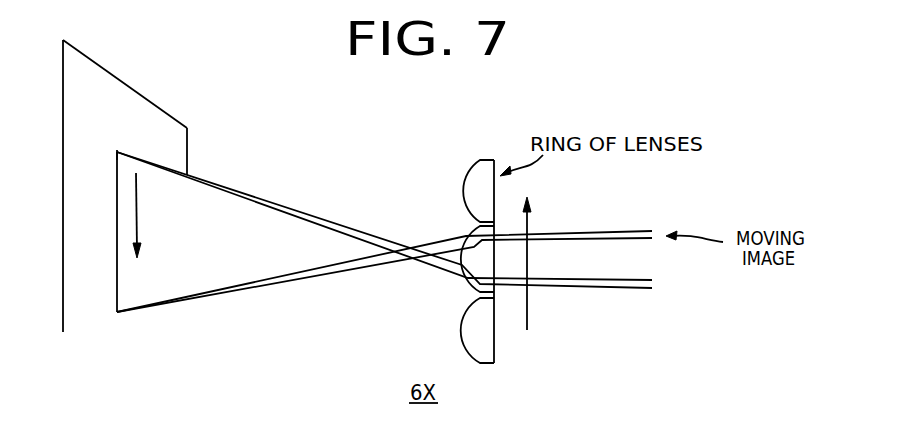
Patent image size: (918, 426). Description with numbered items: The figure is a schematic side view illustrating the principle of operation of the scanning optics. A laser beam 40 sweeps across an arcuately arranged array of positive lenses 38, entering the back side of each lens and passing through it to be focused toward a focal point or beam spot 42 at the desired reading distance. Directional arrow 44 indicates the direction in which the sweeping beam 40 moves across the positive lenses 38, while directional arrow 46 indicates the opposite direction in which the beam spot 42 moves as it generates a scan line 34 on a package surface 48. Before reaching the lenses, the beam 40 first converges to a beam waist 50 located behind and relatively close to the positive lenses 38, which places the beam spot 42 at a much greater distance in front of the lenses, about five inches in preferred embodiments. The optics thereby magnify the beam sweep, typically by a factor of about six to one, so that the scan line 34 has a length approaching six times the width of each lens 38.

The scan line 34 is at (116, 224).
The positive lenses 38 is at (480, 160).
The laser beam 40 is at (590, 237).
The focal point (beam spot) 42 is at (137, 143).
The directional arrow 44 is at (528, 258).
The directional arrow 46 is at (140, 224).
The package surface 48 is at (163, 92).
The beam waist 50 is at (558, 234).